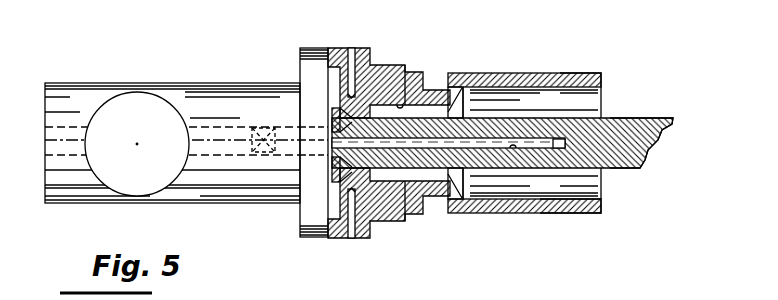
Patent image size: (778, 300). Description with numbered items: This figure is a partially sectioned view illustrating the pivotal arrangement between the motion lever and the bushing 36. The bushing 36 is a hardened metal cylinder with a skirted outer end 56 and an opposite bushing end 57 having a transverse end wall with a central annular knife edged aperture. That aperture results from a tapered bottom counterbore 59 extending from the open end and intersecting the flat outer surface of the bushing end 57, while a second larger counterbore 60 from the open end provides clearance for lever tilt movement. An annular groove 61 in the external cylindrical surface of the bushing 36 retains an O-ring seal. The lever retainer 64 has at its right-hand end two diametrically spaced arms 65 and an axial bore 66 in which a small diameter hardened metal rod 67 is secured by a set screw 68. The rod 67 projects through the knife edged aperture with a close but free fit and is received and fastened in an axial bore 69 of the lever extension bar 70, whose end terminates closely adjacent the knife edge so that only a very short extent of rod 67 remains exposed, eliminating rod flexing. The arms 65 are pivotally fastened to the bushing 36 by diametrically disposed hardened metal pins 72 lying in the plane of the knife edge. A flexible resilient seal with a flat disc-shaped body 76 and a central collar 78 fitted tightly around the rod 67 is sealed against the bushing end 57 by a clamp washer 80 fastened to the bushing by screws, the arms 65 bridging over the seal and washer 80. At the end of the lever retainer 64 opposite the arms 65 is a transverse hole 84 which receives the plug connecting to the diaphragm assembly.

The bushing 36 is at (512, 73).
The skirted outer end 56 is at (588, 73).
The bushing end 57 is at (345, 50).
The tapered bottom counterbore 59 is at (400, 106).
The second larger counterbore 60 is at (572, 213).
The annular groove 61 is at (447, 88).
The lever retainer 64 is at (262, 83).
The arms 65 is at (370, 50).
The axial bore 66 is at (228, 134).
The rod 67 is at (528, 139).
The set screw 68 is at (262, 128).
The axial bore 69 is at (513, 150).
The lever extension bar 70 is at (636, 118).
The hardened metal pins 72 is at (352, 47).
The flat disc-shaped body 76 is at (366, 127).
The central collar 78 is at (332, 160).
The clamp washer 80 is at (336, 113).
The transverse hole 84 is at (126, 93).